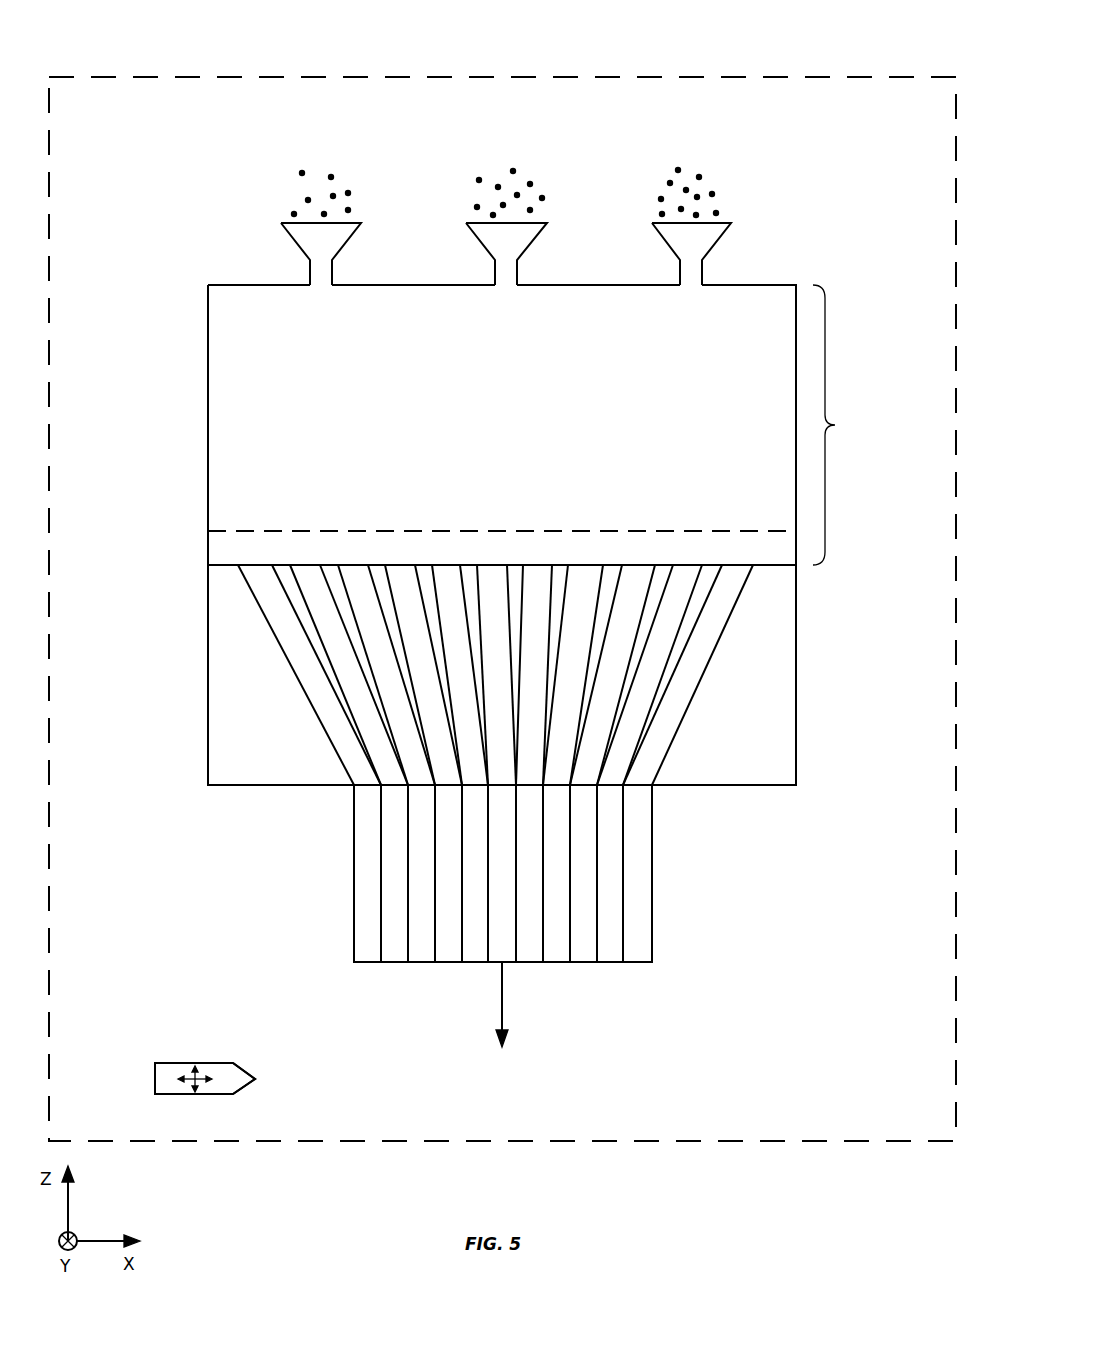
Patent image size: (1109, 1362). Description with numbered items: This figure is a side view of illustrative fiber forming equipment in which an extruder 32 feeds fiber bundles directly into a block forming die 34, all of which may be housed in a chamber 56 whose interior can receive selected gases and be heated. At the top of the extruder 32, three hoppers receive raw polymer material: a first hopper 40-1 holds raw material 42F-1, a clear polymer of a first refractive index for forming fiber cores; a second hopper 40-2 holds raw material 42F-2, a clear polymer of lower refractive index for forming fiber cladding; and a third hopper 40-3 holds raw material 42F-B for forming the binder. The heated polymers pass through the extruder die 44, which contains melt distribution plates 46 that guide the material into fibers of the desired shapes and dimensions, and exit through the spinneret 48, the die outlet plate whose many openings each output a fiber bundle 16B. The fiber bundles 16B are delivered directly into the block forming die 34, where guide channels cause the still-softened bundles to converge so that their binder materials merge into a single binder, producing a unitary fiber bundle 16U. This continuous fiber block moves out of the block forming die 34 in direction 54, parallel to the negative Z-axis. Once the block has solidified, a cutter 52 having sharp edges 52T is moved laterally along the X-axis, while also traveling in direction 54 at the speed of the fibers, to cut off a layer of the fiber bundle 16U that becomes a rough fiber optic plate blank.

The chamber 56 is at (856, 76).
The extruder 32 is at (847, 228).
The raw material 42F-1 is at (320, 158).
The raw material 42F-2 is at (500, 158).
The raw material 42F-B is at (687, 158).
The first hopper 40-1 is at (290, 243).
The second hopper 40-2 is at (476, 243).
The third hopper 40-3 is at (722, 240).
The melt distribution plates 46 is at (216, 421).
The spinneret 48 is at (216, 547).
The extruder die 44 is at (836, 425).
The fiber bundles 16B is at (338, 650).
The block forming die 34 is at (780, 673).
The unitary fiber bundle 16U is at (665, 785).
The direction 54 is at (505, 996).
The cutter 52 is at (177, 1062).
The sharp edges 52T is at (256, 1073).